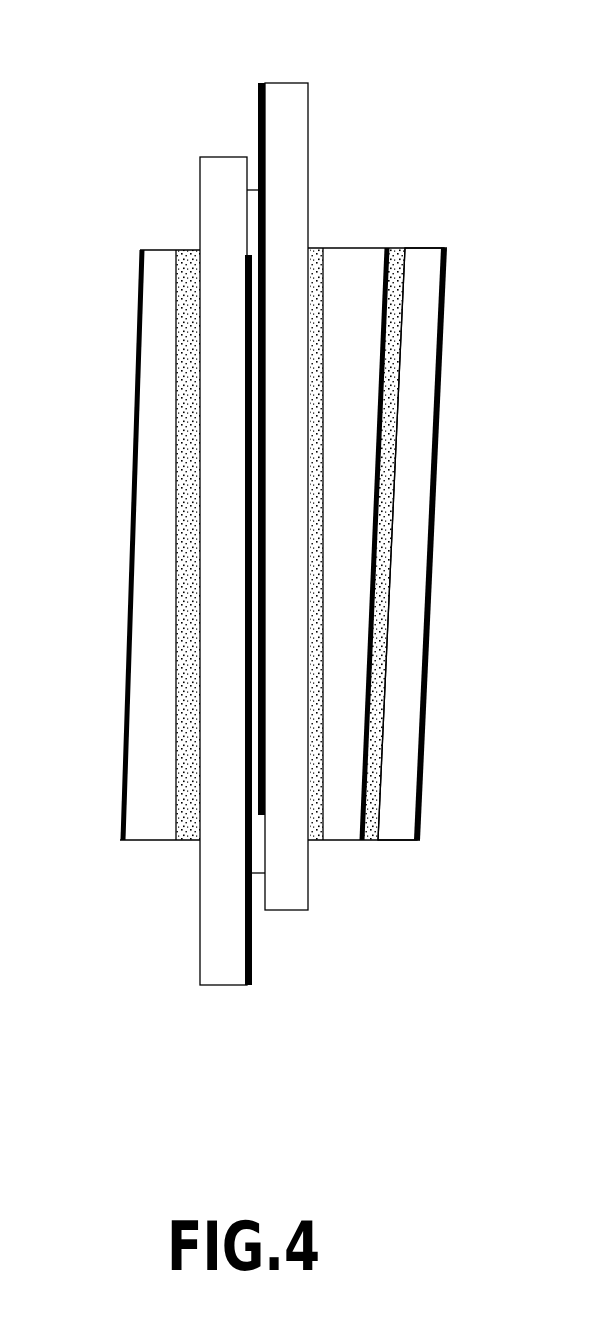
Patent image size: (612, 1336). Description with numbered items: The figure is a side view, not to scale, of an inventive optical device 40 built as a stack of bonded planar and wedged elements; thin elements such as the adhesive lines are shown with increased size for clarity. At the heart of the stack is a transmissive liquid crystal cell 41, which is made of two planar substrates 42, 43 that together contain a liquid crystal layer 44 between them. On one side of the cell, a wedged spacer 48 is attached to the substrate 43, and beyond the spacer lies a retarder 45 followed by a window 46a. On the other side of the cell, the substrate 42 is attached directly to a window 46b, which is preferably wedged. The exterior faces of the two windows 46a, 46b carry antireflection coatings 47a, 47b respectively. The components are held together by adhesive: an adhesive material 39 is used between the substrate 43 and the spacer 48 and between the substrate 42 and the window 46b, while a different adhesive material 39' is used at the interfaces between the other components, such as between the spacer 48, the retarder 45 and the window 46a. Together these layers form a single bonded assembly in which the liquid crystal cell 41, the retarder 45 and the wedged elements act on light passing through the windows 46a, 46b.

The adhesive material 39 is at (219, 530).
The adhesive material 39' is at (424, 520).
The inventive device 40 is at (90, 1015).
The transmissive liquid crystal cell 41 is at (347, 70).
The planar substrate 42 is at (200, 170).
The planar substrate 43 is at (308, 120).
The liquid crystal layer 44 is at (257, 858).
The retarder 45 is at (360, 778).
The window 46a is at (425, 840).
The window 46b is at (158, 249).
The antireflection coating 47a is at (421, 756).
The antireflection coating 47b is at (128, 634).
The wedged spacer 48 is at (353, 247).